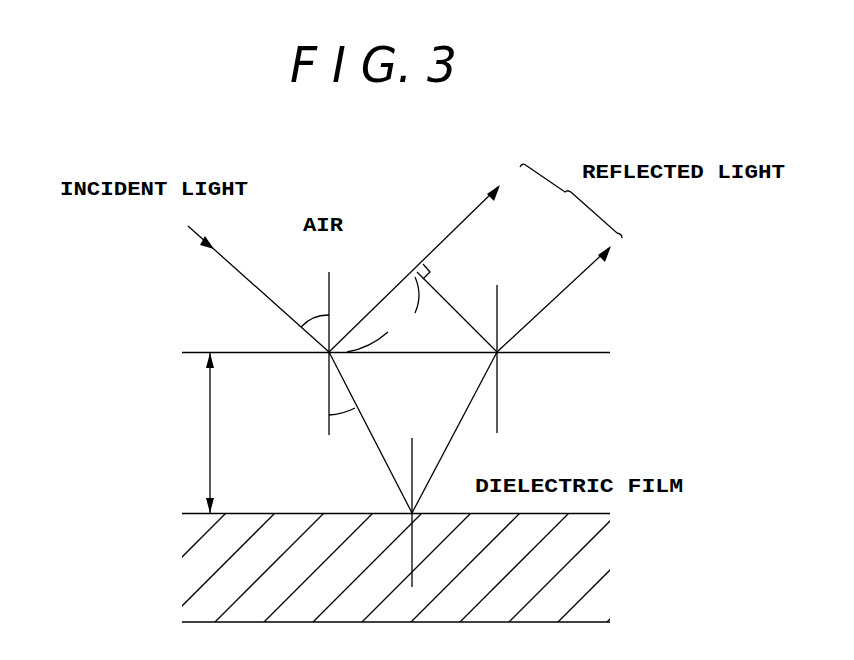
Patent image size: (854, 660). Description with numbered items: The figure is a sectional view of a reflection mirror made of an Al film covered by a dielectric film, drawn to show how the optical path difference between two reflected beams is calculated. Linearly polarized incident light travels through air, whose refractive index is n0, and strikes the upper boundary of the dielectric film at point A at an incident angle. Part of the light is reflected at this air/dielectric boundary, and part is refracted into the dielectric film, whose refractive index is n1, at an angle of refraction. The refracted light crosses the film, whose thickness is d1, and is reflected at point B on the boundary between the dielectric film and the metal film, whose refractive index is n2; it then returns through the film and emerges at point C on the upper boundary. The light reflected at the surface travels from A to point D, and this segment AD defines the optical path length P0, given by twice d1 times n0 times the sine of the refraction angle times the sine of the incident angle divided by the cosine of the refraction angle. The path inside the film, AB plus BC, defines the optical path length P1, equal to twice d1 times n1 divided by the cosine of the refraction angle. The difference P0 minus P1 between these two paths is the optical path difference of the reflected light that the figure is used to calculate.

The point of incidence A is at (315, 353).
The reflection point on dielectric film/metal film boundary B is at (433, 512).
The exit point on air/dielectric film boundary C is at (512, 359).
The end point of path AD D is at (442, 296).
The optical path length in air P0 is at (383, 314).
The optical path length in dielectric film P1 is at (413, 432).
The thickness of the dielectric film d1 is at (196, 433).
The refractive index of air n0 is at (665, 313).
The refractive index of the dielectric film n1 is at (665, 428).
The refractive index of the metal film n2 is at (634, 554).